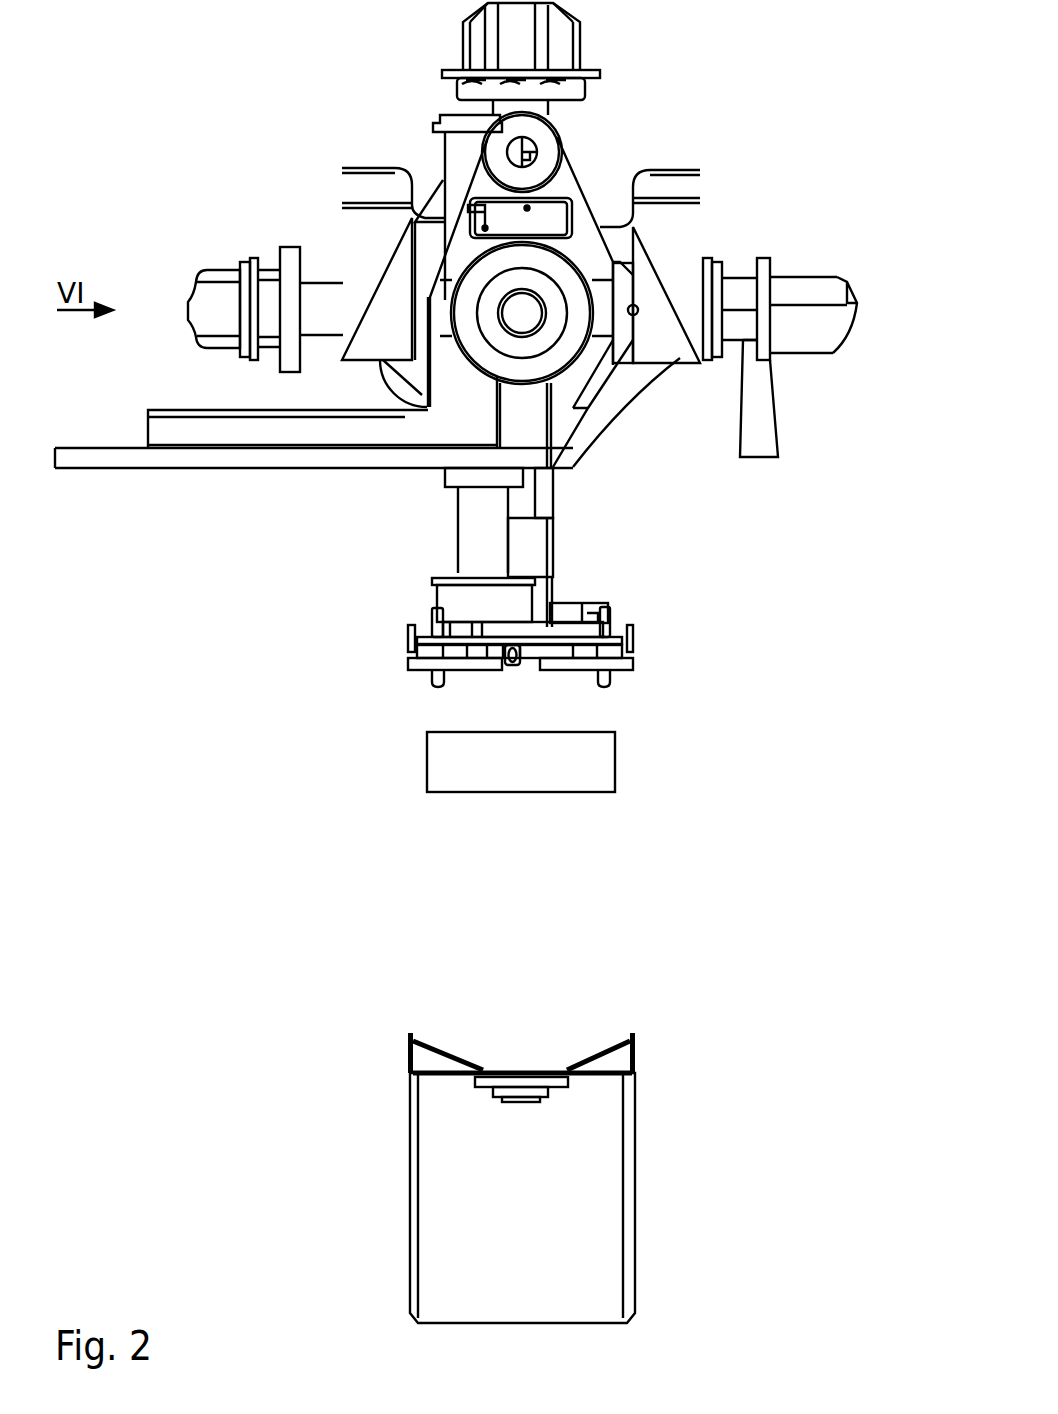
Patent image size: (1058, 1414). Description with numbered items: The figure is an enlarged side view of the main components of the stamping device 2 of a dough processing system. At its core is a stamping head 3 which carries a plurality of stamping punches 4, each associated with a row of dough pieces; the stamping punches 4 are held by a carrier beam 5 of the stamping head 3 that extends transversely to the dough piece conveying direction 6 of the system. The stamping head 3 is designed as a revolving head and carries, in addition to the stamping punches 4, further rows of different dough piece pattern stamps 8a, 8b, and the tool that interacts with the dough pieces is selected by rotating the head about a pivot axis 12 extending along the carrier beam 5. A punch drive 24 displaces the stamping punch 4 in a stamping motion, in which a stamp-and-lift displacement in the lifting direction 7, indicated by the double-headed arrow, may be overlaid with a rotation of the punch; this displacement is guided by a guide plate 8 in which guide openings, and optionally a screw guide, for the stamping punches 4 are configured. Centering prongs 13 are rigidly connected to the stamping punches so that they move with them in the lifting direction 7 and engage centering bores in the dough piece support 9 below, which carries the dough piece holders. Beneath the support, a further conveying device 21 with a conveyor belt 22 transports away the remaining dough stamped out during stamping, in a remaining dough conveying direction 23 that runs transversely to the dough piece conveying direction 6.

The stamping device 2 is at (810, 173).
The stamping head 3 is at (580, 432).
The stamping punch 4 is at (542, 583).
The carrier beam 5 is at (440, 190).
The dough piece conveying direction 6 is at (630, 715).
The lifting direction 7 is at (613, 522).
The guide plate 8 is at (435, 623).
The dough piece pattern stamp 8a is at (217, 290).
The dough piece pattern stamp 8b is at (567, 44).
The dough piece support 9 is at (420, 758).
The pivot axis 12 is at (572, 163).
The centering prong 13 is at (610, 677).
The conveying device 21 is at (645, 1153).
The conveyor belt 22 is at (438, 1047).
The remaining dough conveying direction 23 is at (524, 1031).
The punch drive 24 is at (592, 264).